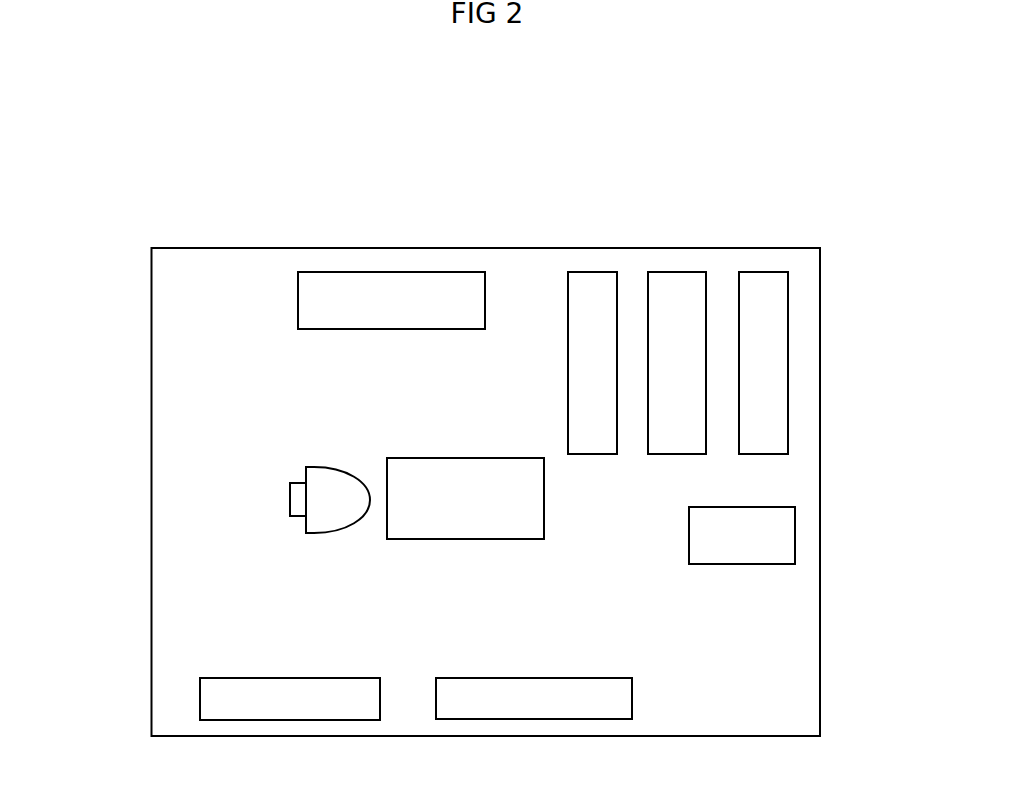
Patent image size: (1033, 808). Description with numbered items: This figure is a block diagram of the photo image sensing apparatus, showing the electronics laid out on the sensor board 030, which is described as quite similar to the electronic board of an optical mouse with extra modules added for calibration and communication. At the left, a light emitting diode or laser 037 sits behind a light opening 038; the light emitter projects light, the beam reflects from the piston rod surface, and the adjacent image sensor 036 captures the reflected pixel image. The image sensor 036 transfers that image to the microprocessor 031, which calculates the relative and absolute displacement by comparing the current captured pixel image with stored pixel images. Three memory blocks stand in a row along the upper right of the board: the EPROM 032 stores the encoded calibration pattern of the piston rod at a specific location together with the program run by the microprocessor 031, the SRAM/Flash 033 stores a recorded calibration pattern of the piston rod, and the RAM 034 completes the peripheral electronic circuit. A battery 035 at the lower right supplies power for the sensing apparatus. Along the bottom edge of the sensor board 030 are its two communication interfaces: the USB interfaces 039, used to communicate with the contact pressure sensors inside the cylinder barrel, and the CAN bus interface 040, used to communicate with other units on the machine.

The sensor board 030 is at (192, 271).
The microprocessor 031 is at (388, 279).
The EPROM 032 is at (583, 287).
The SRAM/Flash 033 is at (682, 287).
The RAM 034 is at (755, 287).
The battery 035 is at (778, 532).
The image sensor 036 is at (428, 475).
The light emitting diode or laser 037 is at (298, 501).
The light opening 038 is at (315, 523).
The USB interfaces 039 is at (249, 702).
The CAN bus interface 040 is at (486, 703).